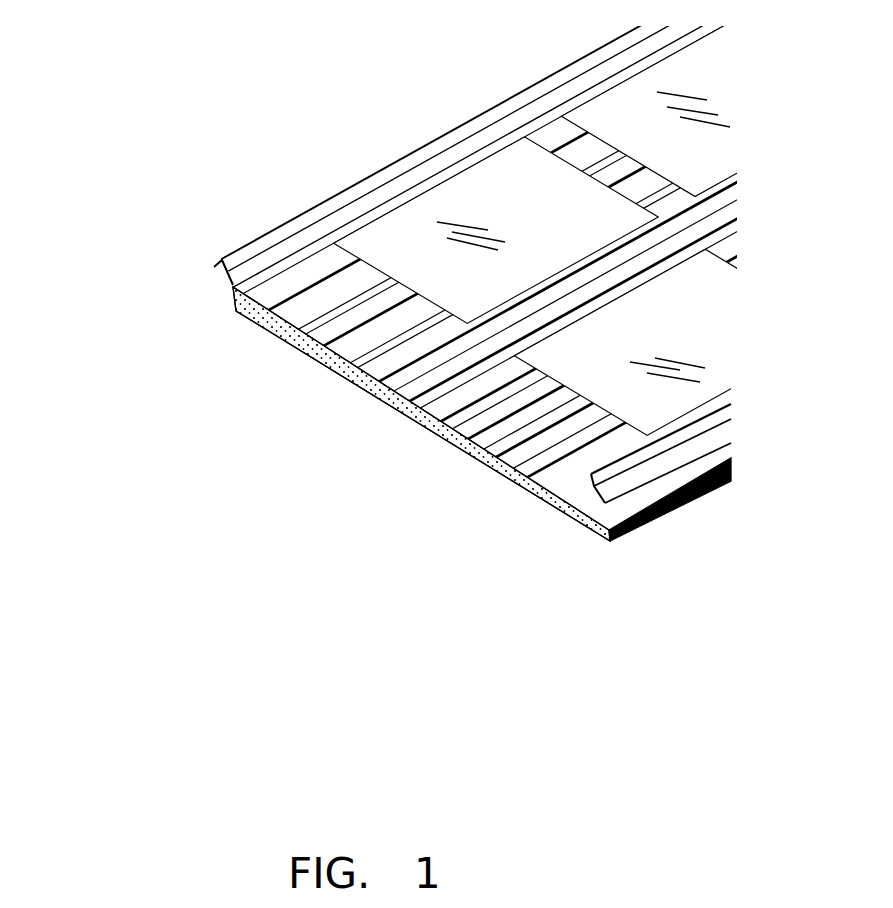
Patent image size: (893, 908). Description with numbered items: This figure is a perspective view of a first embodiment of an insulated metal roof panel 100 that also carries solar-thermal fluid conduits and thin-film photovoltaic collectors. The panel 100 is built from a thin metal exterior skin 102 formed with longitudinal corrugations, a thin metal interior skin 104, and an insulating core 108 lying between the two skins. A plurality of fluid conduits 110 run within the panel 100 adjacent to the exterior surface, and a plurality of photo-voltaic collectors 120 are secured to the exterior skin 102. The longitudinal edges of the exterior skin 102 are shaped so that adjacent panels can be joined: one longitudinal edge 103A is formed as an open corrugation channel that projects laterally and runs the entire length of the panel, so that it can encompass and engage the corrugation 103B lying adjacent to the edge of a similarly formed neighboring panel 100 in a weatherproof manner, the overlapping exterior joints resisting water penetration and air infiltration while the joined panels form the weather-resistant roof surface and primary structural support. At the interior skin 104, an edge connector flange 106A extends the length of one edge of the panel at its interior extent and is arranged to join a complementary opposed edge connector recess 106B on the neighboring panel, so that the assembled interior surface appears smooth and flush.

The insulated metal panel 100 is at (455, 322).
The exterior skin 102 is at (445, 265).
The longitudinal edge 103A is at (433, 172).
The corrugation 103B is at (650, 524).
The interior skin 104 is at (456, 249).
The edge connector flange 106A is at (374, 454).
The edge connector recess 106B is at (441, 198).
The insulating core 108 is at (315, 425).
The fluid conduits 110 is at (456, 266).
The photo-voltaic collectors 120 is at (460, 222).